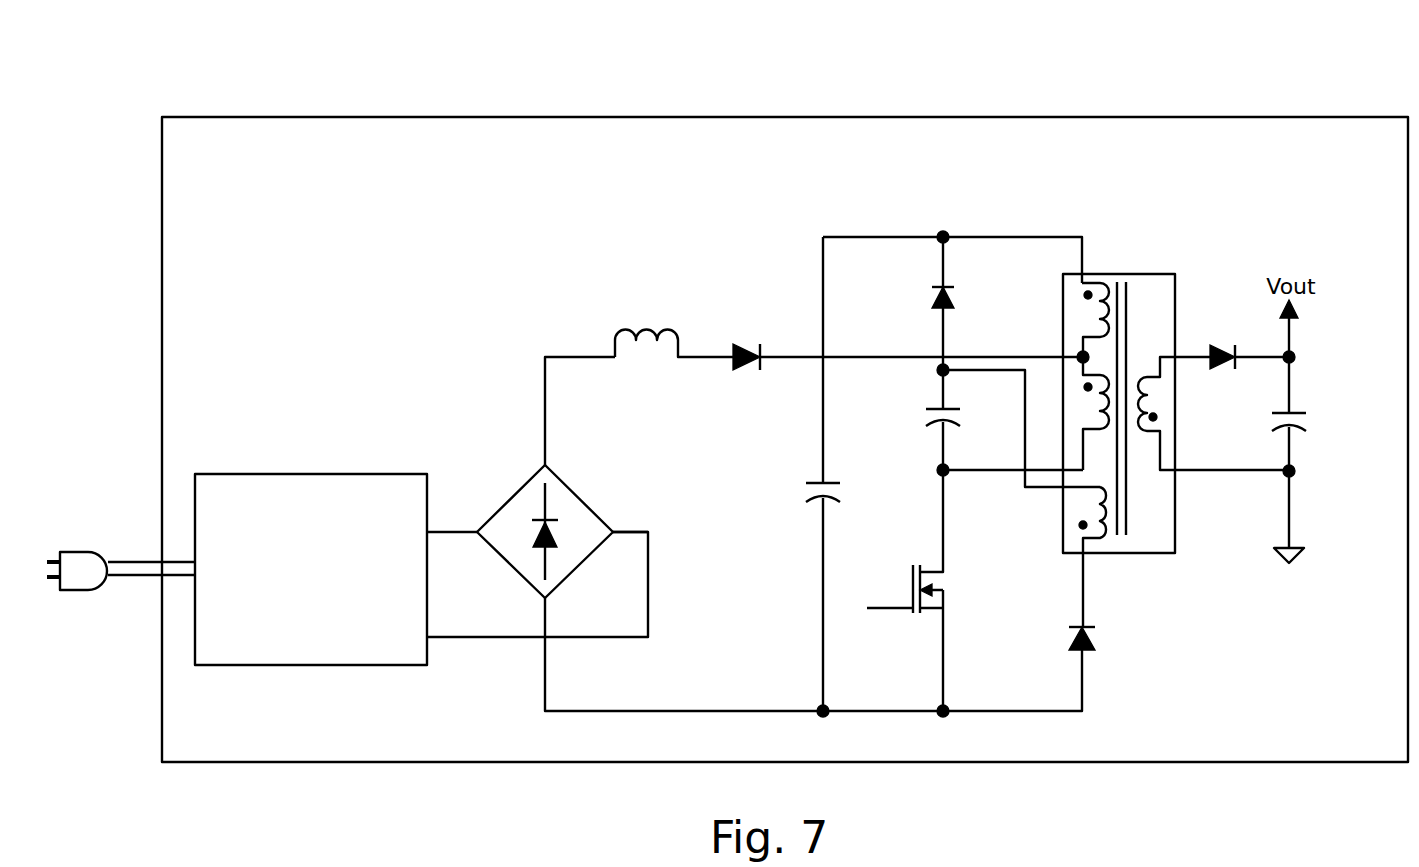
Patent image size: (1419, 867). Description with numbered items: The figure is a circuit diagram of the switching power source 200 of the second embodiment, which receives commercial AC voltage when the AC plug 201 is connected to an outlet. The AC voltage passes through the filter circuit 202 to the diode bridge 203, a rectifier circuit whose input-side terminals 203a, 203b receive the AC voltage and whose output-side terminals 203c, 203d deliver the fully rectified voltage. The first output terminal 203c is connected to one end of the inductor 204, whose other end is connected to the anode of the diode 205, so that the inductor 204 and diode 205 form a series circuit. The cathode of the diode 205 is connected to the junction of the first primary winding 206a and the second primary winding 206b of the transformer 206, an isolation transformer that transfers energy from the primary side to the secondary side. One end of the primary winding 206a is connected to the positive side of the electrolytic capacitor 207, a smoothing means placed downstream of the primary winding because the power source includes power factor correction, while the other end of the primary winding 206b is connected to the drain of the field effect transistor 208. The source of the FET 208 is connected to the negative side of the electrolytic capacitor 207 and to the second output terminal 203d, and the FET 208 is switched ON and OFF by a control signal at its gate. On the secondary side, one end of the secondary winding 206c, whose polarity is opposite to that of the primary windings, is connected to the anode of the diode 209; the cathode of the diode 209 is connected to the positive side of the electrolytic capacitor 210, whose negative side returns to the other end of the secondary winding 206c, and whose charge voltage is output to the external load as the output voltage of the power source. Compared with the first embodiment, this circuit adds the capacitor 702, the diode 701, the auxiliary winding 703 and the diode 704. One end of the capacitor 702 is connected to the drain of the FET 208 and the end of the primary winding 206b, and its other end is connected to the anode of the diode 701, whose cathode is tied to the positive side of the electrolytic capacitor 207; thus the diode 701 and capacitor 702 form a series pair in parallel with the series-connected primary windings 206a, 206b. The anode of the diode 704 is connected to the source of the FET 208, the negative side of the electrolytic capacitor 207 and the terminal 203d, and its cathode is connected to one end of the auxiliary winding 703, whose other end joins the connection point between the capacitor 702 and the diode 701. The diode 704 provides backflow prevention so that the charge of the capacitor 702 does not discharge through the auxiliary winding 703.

The switching power source 200 is at (733, 113).
The AC plug 201 is at (98, 600).
The filter circuit 202 is at (312, 468).
The diode bridge 203 is at (518, 492).
The terminal 203a is at (470, 525).
The terminal 203b is at (615, 522).
The first output terminal 203c is at (553, 462).
The second output terminal 203d is at (537, 602).
The inductor 204 is at (647, 320).
The first rectifier element 205 is at (742, 335).
The transformer 206 is at (1117, 405).
The first primary winding 206a is at (1083, 312).
The second primary winding 206b is at (1080, 410).
The secondary winding 206c is at (1142, 347).
The electrolytic capacitor 207 is at (800, 498).
The field effect transistor 208 is at (950, 593).
The diode 209 is at (1215, 347).
The electrolytic capacitor 210 is at (1317, 420).
The second rectifier element 701 is at (928, 293).
The second capacitor 702 is at (932, 433).
The auxiliary winding 703 is at (1108, 540).
The third rectifier element 704 is at (1098, 635).